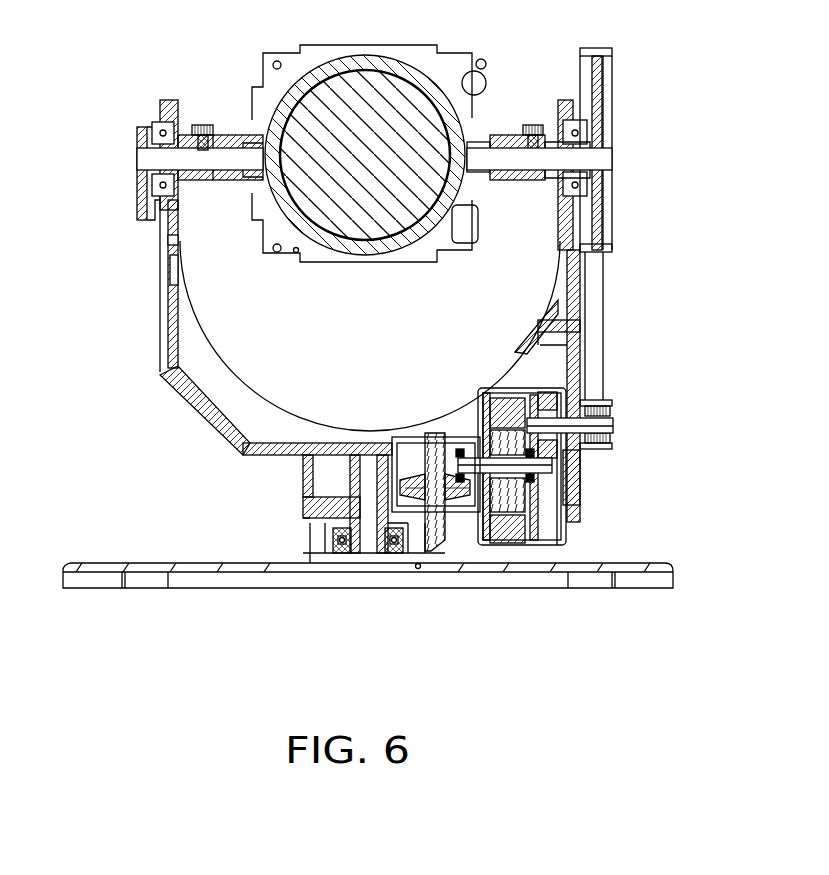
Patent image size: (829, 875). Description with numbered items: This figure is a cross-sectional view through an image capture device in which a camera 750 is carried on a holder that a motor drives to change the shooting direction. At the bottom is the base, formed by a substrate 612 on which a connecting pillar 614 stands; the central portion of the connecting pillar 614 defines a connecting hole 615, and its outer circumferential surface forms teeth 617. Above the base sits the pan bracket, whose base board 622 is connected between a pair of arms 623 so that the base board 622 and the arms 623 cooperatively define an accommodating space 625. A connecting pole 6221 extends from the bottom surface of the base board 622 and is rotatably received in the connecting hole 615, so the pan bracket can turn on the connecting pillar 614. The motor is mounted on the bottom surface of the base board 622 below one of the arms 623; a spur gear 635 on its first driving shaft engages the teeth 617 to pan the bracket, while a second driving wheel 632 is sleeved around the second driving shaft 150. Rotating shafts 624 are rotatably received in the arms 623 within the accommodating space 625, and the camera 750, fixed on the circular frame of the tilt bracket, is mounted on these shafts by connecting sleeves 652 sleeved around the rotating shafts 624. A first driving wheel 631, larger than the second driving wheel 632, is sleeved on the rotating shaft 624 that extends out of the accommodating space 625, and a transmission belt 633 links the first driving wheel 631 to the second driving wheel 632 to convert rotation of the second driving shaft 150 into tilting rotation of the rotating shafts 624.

The camera 750 is at (338, 90).
The connecting sleeve 652 is at (235, 128).
The first driving wheel 631 is at (613, 57).
The rotating shaft 624 is at (181, 190).
The arm 623 is at (168, 268).
The accommodating space 625 is at (232, 300).
The transmission belt 633 is at (598, 305).
The second driving wheel 632 is at (614, 408).
The second driving shaft 150 is at (614, 428).
The base board 622 is at (266, 447).
The connecting pole 6221 is at (368, 510).
The connecting pillar 614 is at (311, 552).
The substrate 612 is at (586, 565).
The connecting hole 615 is at (343, 565).
The teeth 617 is at (426, 558).
The spur gear 635 is at (441, 546).